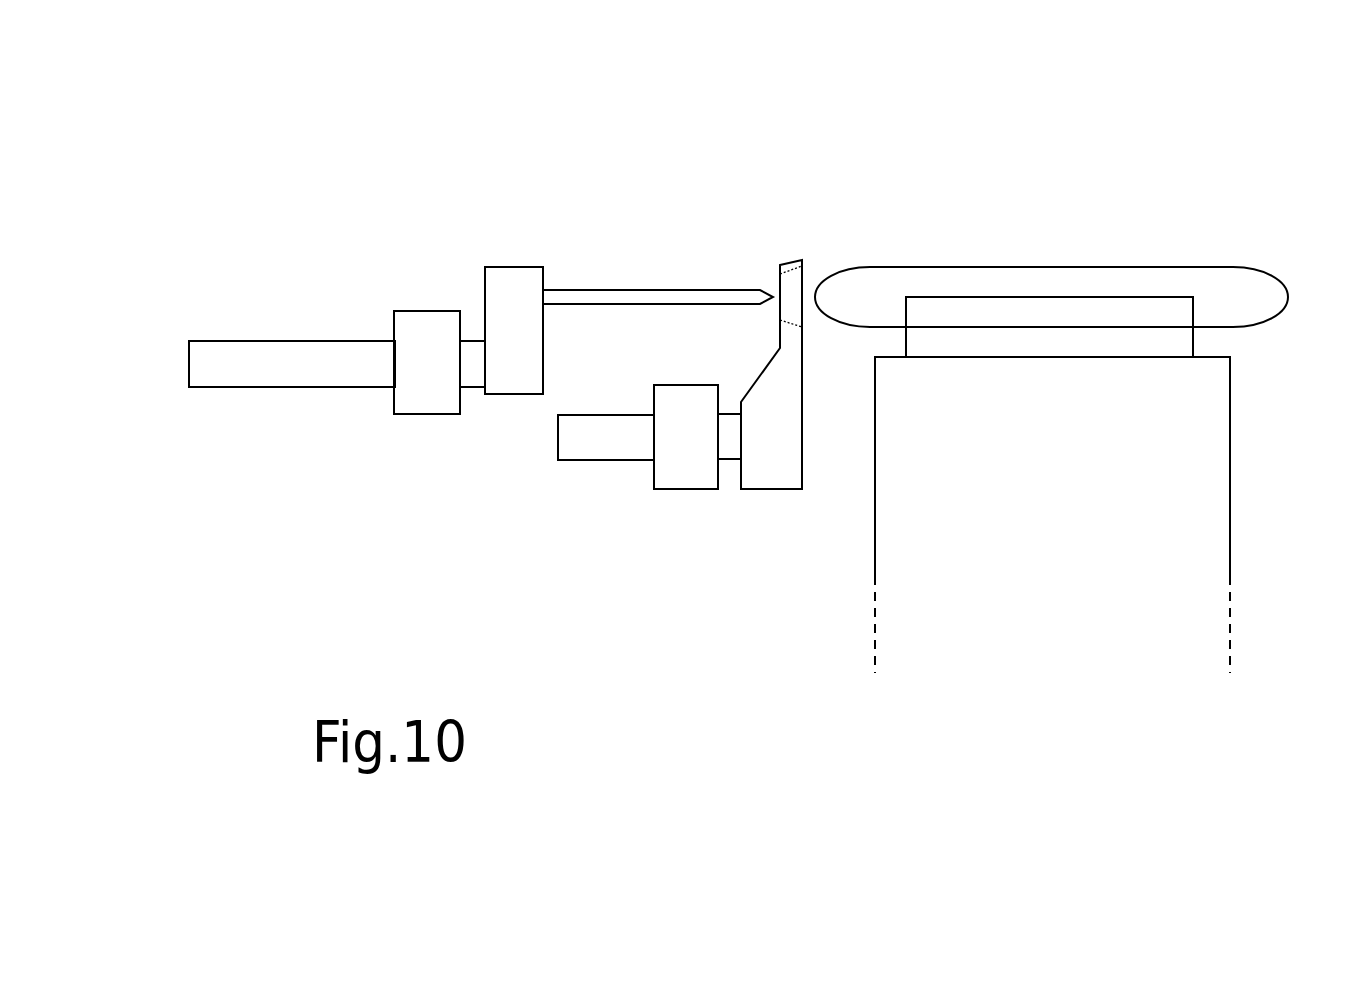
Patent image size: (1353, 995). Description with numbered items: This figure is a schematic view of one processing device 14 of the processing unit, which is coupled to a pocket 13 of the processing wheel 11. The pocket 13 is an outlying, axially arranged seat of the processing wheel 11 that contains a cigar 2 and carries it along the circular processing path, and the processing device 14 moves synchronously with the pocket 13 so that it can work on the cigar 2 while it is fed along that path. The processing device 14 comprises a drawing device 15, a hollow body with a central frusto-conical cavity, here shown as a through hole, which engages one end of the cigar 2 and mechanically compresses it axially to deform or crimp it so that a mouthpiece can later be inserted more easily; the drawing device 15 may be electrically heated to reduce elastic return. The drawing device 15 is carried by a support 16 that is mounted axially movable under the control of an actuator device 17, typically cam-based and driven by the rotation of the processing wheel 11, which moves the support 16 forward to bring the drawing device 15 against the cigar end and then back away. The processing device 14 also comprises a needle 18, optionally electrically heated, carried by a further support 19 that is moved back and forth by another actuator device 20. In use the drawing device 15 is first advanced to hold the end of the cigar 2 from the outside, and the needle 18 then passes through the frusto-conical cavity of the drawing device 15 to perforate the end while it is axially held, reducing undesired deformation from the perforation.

The cigar 2 is at (1059, 283).
The processing wheel 11 is at (1172, 497).
The pocket 13 is at (1163, 340).
The processing device 14 is at (482, 188).
The drawing device 15 is at (786, 266).
The support 16 is at (773, 466).
The actuator device 17 is at (653, 533).
The needle 18 is at (668, 297).
The support 19 is at (506, 377).
The actuator device 20 is at (320, 448).